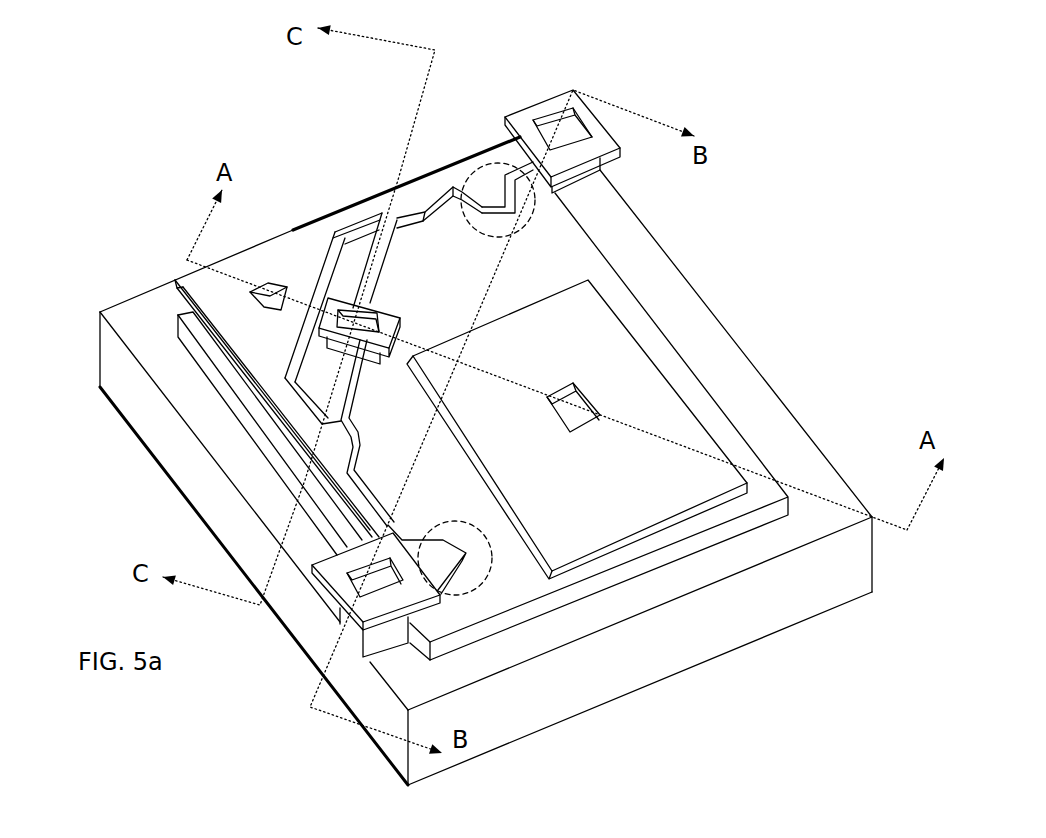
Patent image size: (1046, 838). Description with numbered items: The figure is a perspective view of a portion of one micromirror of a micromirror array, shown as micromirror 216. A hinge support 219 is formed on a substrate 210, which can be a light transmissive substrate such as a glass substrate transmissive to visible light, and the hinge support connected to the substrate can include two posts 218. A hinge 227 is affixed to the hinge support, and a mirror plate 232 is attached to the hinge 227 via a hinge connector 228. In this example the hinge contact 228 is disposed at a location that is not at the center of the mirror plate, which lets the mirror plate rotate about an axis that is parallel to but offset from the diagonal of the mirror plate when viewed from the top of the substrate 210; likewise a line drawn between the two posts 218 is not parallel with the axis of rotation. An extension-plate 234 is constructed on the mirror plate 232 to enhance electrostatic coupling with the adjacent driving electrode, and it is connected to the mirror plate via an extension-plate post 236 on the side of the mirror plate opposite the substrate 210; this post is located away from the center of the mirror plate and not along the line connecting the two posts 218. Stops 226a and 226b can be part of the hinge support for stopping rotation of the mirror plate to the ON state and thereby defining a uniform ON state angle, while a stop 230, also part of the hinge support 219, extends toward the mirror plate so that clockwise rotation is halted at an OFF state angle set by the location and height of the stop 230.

The substrate 210 is at (752, 622).
The micro-electromechanical device 216 is at (126, 165).
The posts 218 is at (562, 128).
The hinge support 219 is at (369, 199).
The stop 226a is at (497, 195).
The stop 226b is at (463, 522).
The hinge 227 is at (391, 266).
The hinge connector 228 is at (401, 313).
The stop 230 is at (261, 283).
The mirror plate 232 is at (646, 312).
The extension-plate 234 is at (684, 398).
The extension-plate post 236 is at (582, 433).